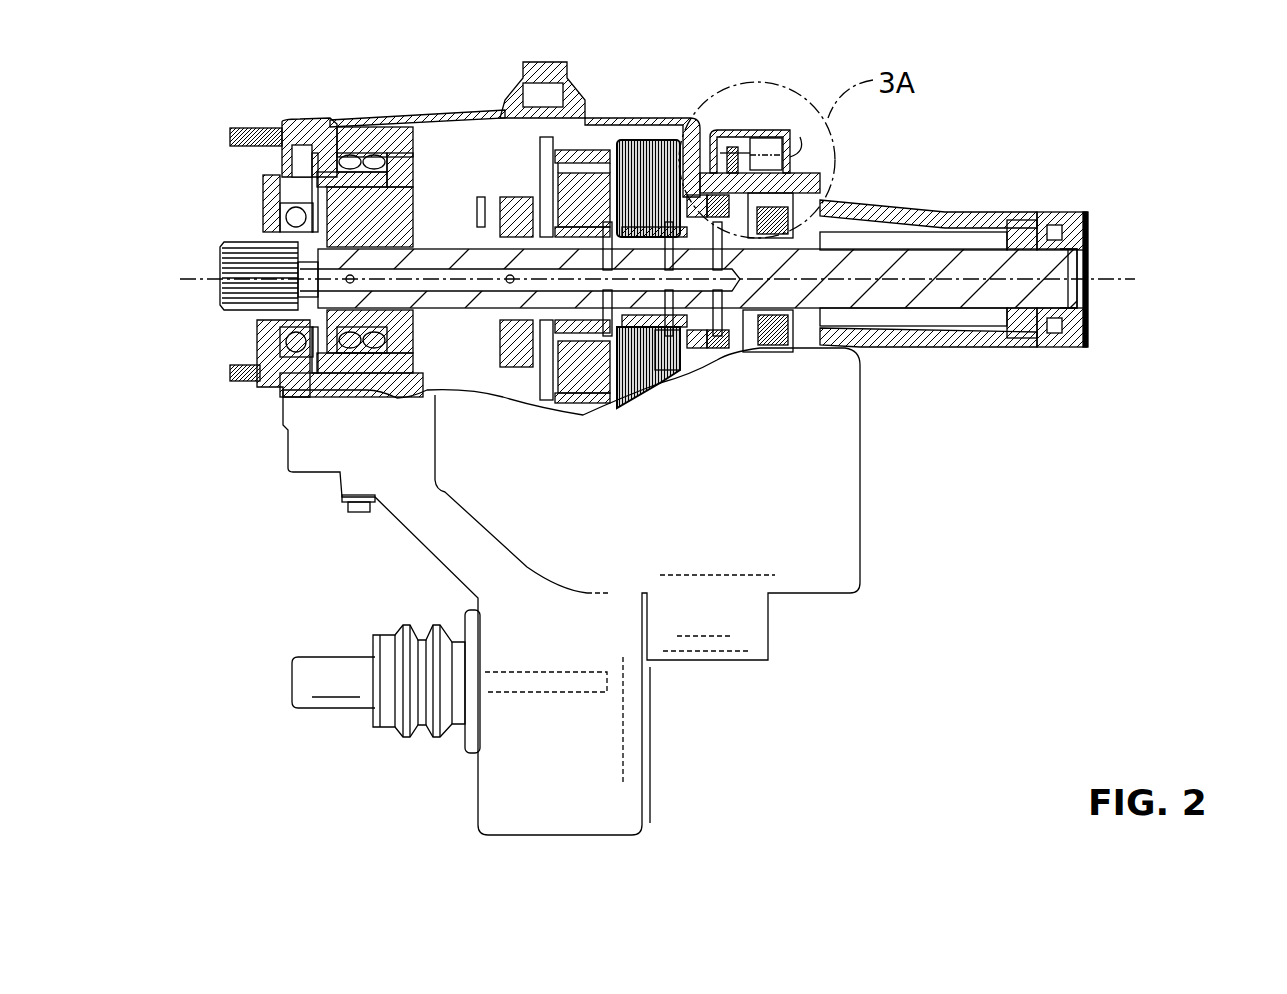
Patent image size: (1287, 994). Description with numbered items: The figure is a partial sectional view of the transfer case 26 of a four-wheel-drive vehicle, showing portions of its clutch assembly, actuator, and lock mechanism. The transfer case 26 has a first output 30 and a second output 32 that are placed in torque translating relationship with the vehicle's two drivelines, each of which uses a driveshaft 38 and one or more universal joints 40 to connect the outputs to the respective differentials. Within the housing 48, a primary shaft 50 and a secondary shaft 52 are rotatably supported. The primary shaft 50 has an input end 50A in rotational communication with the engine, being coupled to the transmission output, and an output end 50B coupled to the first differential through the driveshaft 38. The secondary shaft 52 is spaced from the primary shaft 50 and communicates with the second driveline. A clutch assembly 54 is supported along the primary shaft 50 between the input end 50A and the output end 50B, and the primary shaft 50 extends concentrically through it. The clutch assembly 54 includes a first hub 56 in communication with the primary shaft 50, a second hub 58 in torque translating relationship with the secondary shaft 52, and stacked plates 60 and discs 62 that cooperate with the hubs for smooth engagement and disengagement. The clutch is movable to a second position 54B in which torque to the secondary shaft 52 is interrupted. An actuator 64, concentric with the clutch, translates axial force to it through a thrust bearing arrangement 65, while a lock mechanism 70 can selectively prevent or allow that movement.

The transfer case 26 is at (303, 108).
The first output 30 is at (1103, 251).
The second output 32 is at (395, 720).
The driveshaft 38 is at (308, 707).
The universal joints 40 is at (410, 722).
The housing 48 is at (588, 113).
The primary shaft 50 is at (434, 236).
The input end 50A is at (335, 297).
The output end 50B is at (1090, 314).
The secondary shaft 52 is at (553, 692).
The clutch assembly 54 is at (690, 146).
The second position 54B is at (653, 138).
The first hub 56 is at (704, 350).
The second hub 58 is at (618, 150).
The plates 60 is at (660, 368).
The discs 62 is at (660, 372).
The actuator 64 is at (733, 358).
The thrust bearing arrangement 65 is at (680, 348).
The lock mechanism 70 is at (765, 116).